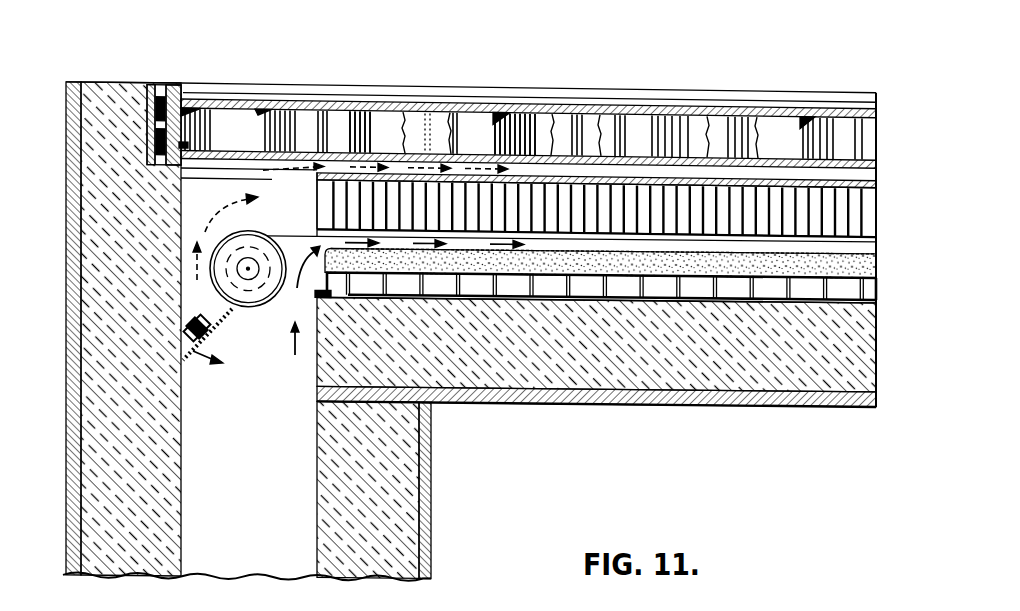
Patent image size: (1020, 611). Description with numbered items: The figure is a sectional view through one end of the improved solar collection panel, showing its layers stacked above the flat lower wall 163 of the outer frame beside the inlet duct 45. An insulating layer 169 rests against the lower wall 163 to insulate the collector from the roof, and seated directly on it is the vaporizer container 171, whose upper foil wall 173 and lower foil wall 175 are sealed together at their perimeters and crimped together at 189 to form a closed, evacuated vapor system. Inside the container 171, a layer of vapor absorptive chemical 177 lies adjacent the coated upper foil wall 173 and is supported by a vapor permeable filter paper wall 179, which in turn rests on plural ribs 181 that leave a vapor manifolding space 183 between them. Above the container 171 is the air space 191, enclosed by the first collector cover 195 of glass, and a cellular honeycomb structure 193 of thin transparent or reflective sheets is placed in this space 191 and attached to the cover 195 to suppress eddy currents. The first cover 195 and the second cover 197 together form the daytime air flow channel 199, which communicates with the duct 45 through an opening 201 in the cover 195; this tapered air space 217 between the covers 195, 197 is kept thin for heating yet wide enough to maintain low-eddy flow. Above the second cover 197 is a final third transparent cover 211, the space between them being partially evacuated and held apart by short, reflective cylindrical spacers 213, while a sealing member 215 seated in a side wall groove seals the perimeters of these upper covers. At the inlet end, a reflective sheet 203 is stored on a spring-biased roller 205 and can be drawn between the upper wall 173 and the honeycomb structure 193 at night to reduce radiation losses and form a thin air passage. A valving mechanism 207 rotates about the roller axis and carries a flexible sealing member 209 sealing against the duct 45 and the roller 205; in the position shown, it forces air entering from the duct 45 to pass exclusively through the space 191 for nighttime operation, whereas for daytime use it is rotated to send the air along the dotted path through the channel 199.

The duct 45 is at (392, 508).
The lower wall 163 is at (717, 397).
The insulating layer 169 is at (781, 378).
The vaporizer container 171 is at (327, 267).
The upper foil wall 173 is at (668, 258).
The lower foil wall 175 is at (551, 300).
The vapor absorptive chemical 177 is at (627, 274).
The filter paper wall 179 is at (592, 281).
The ribs 181 is at (440, 290).
The vapor manifolding space 183 is at (507, 290).
The crimp 189 is at (313, 297).
The air space 191 is at (603, 250).
The honeycomb structure 193 is at (770, 200).
The first collector cover 195 is at (390, 175).
The second cover 197 is at (333, 168).
The daytime air flow channel 199 is at (528, 174).
The opening 201 is at (318, 180).
The reflective sheet 203 is at (310, 235).
The roller 205 is at (229, 248).
The valving mechanism 207 is at (178, 320).
The flexible sealing member 209 is at (233, 313).
The third transparent cover 211 is at (232, 100).
The cylindrical spacers 213 is at (480, 127).
The sealing member 215 is at (150, 130).
The air space 217 is at (370, 150).